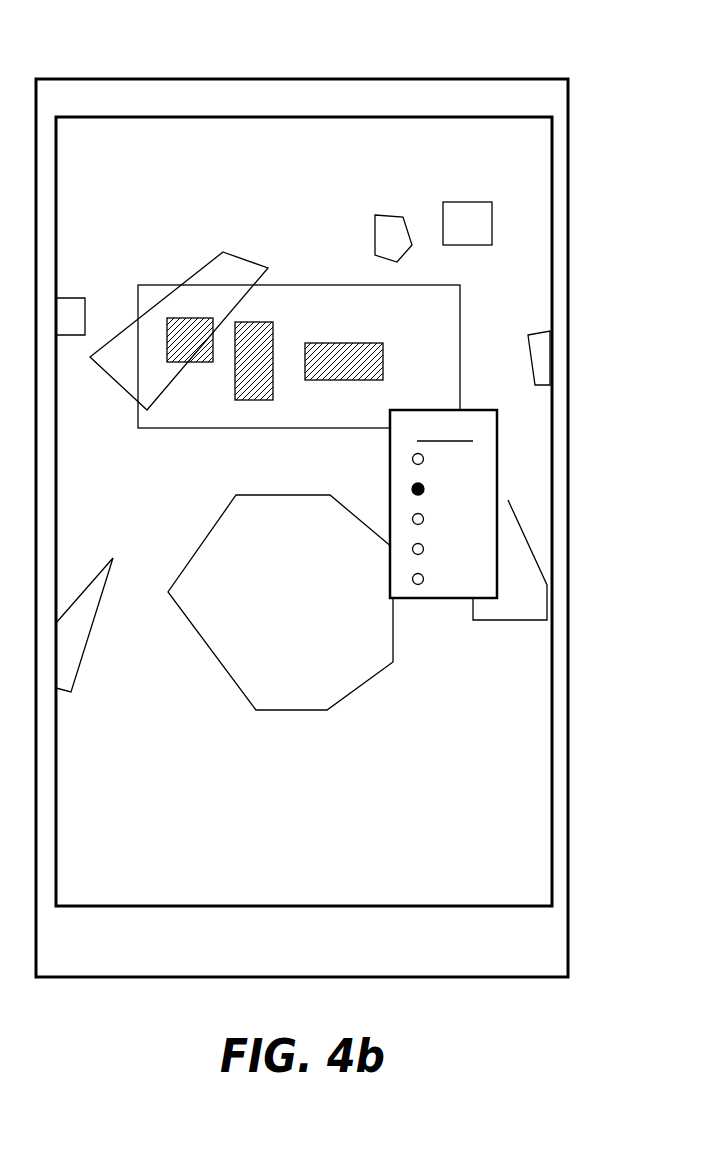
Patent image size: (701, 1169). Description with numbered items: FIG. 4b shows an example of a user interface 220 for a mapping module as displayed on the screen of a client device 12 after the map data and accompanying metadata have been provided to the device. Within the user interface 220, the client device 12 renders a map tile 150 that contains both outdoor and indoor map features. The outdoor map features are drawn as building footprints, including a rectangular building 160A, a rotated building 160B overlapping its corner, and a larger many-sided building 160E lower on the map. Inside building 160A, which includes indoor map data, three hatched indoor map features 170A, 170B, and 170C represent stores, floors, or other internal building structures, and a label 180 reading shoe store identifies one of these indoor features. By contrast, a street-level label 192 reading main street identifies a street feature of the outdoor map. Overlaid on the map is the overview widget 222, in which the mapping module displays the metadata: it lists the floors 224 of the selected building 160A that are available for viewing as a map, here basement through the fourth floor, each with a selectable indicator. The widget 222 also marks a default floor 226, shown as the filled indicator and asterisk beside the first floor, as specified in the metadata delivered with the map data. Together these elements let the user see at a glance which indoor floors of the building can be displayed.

The client device 12 is at (420, 78).
The user interface 220 is at (528, 150).
The map tile 150 is at (329, 174).
The building 160A is at (154, 432).
The building 160B is at (203, 270).
The building 160E is at (199, 638).
The indoor map feature 170A is at (180, 327).
The indoor map feature 170B is at (246, 400).
The indoor map feature 170C is at (343, 382).
The label for indoor map feature 180 is at (420, 313).
The street-level label 192 is at (238, 755).
The widget 222 is at (482, 592).
The floor indications 224 is at (423, 559).
The default floor indication 226 is at (467, 475).